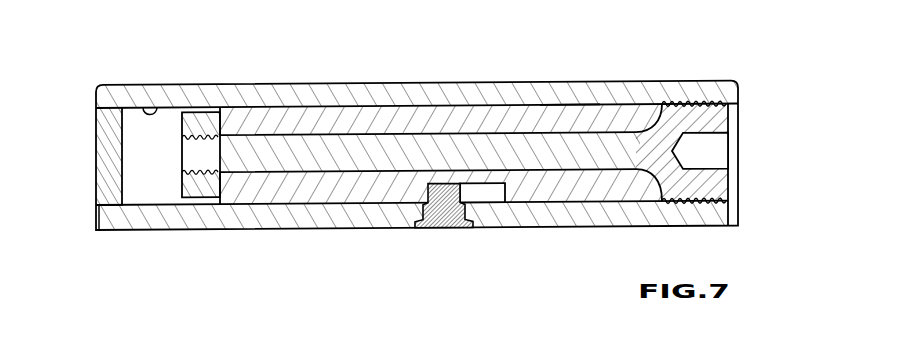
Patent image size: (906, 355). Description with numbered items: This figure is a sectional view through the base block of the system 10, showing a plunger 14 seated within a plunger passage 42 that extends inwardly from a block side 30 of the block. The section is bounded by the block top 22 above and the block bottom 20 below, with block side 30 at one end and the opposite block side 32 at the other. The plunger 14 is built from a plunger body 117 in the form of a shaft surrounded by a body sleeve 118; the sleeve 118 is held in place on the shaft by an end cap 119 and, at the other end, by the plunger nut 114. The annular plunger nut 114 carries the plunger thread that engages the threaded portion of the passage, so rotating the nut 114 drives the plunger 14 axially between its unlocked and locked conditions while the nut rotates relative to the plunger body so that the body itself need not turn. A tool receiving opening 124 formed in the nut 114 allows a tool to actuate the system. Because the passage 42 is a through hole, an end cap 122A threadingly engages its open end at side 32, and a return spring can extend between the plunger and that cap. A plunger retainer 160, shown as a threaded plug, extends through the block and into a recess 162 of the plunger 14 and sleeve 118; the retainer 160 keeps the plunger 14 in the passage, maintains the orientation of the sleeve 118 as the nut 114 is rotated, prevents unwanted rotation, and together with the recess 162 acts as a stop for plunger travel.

The system 10 is at (750, 52).
The plunger 14 is at (572, 100).
The block bottom 20 is at (607, 229).
The block top 22 is at (235, 84).
The block side 30 is at (738, 103).
The block side 32 is at (95, 229).
The plunger passage 42 is at (151, 106).
The plunger nut 114 is at (713, 182).
The plunger body 117 is at (503, 145).
The body sleeve 118 is at (458, 117).
The end cap 119 is at (206, 193).
The end cap 122A is at (96, 127).
The tool receiving opening 124 is at (710, 158).
The plunger retainer 160 is at (449, 217).
The recess 162 is at (487, 193).